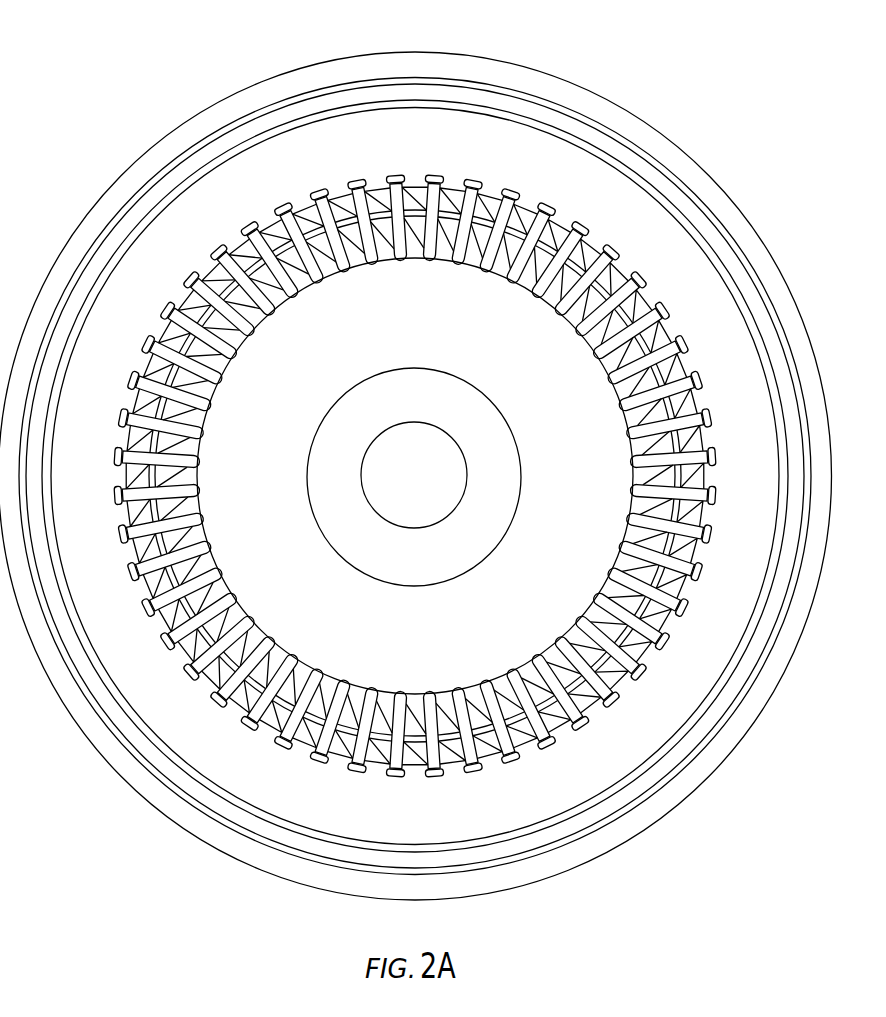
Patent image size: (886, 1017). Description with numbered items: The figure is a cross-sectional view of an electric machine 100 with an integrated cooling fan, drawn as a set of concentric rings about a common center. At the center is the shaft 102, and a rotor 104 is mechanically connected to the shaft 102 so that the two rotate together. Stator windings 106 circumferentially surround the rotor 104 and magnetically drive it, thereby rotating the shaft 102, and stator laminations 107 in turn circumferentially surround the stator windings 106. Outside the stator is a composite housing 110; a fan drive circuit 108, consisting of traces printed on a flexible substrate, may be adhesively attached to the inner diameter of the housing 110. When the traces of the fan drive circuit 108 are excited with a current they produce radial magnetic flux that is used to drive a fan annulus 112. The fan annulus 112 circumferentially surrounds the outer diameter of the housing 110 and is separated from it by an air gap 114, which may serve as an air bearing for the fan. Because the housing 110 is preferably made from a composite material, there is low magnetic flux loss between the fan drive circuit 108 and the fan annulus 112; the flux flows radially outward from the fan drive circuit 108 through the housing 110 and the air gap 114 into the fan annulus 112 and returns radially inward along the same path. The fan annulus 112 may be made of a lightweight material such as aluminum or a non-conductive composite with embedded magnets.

The electric machine 100 is at (72, 161).
The shaft 102 is at (433, 505).
The rotor 104 is at (489, 461).
The stator windings 106 is at (650, 303).
The stator laminations 107 is at (518, 157).
The fan drive circuit 108 is at (682, 217).
The composite housing 110 is at (650, 175).
The fan annulus 112 is at (602, 112).
The air gap 114 is at (632, 148).